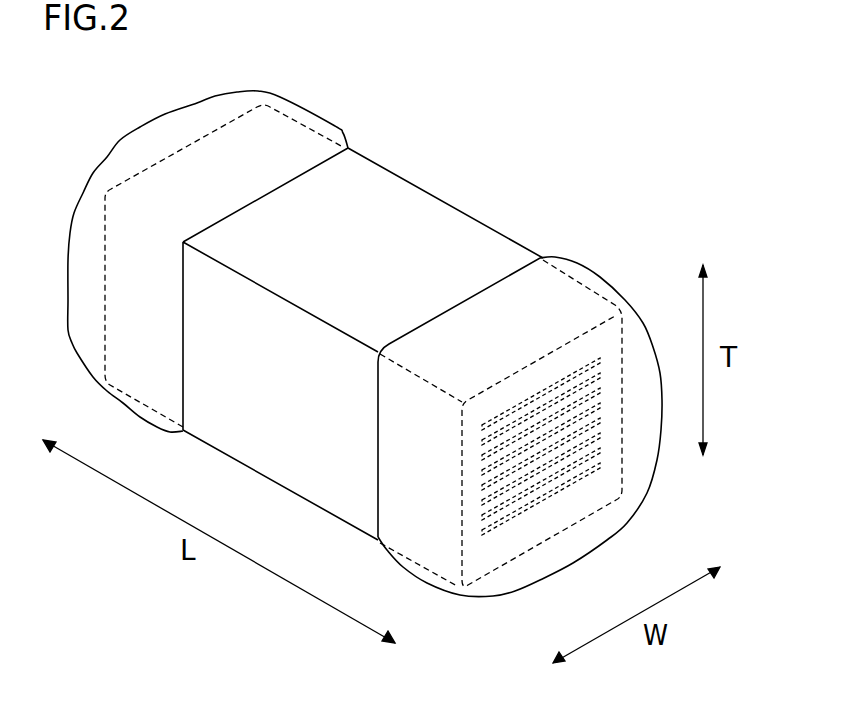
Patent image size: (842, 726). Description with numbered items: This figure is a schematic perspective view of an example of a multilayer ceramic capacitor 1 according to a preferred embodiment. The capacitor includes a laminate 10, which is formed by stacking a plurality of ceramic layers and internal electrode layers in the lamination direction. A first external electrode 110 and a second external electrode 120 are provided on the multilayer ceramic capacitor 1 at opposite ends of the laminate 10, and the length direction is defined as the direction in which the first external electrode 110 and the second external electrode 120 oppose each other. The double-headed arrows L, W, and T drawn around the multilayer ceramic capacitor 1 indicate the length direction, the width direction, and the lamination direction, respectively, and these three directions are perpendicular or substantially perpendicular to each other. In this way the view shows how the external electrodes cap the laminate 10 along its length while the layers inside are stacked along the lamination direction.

The multilayer ceramic capacitor 1 is at (365, 320).
The laminate 10 is at (413, 218).
The first external electrode 110 is at (263, 128).
The second external electrode 120 is at (572, 290).